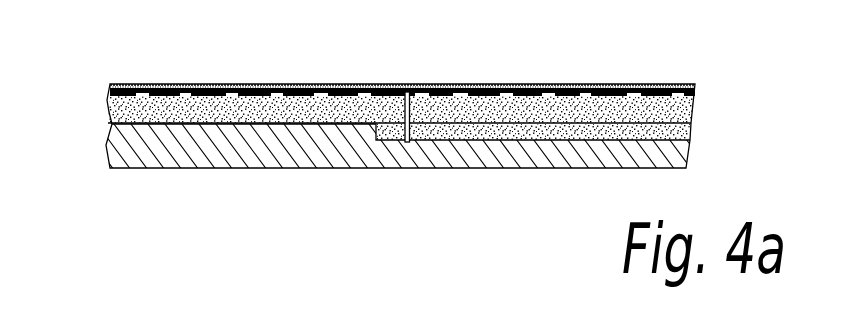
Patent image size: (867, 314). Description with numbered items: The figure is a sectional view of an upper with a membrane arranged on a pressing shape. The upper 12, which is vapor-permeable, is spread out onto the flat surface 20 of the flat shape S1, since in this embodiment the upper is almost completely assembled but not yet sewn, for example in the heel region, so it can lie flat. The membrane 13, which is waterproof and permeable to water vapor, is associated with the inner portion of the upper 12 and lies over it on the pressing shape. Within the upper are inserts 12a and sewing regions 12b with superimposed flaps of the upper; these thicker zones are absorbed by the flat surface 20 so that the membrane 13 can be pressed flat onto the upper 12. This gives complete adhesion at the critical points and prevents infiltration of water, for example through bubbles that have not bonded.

The upper 12 is at (188, 110).
The inserts 12a is at (585, 130).
The sewing regions 12b is at (410, 112).
The membrane 13 is at (320, 86).
The flat surface 20 is at (142, 124).
The flat shape S1 is at (288, 160).